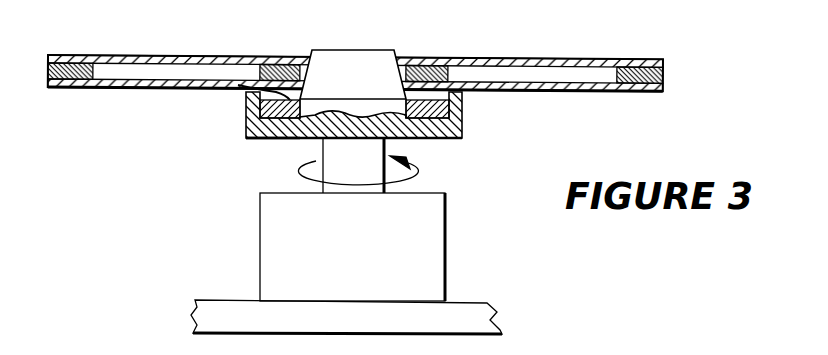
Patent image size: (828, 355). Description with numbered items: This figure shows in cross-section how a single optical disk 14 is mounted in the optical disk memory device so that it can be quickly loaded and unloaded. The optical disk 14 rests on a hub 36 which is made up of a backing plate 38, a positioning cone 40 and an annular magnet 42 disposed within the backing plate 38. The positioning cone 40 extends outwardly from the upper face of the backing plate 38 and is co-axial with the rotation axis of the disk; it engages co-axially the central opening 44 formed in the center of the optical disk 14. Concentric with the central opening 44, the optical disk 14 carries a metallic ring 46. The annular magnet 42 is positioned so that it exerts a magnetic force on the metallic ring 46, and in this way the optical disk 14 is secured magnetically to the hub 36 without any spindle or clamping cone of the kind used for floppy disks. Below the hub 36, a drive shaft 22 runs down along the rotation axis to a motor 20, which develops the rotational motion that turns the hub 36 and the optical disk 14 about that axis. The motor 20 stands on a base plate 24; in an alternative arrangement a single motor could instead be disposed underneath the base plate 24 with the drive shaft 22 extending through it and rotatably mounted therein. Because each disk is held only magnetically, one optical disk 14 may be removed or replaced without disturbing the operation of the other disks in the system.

The optical disk 14 is at (634, 57).
The motor 20 is at (437, 233).
The drive shaft 22 is at (363, 152).
The base plate 24 is at (450, 316).
The hub 36 is at (468, 125).
The backing plate 38 is at (268, 140).
The positioning cone 40 is at (356, 50).
The annular magnet 42 is at (238, 88).
The central opening 44 is at (303, 64).
The metallic ring 46 is at (421, 72).